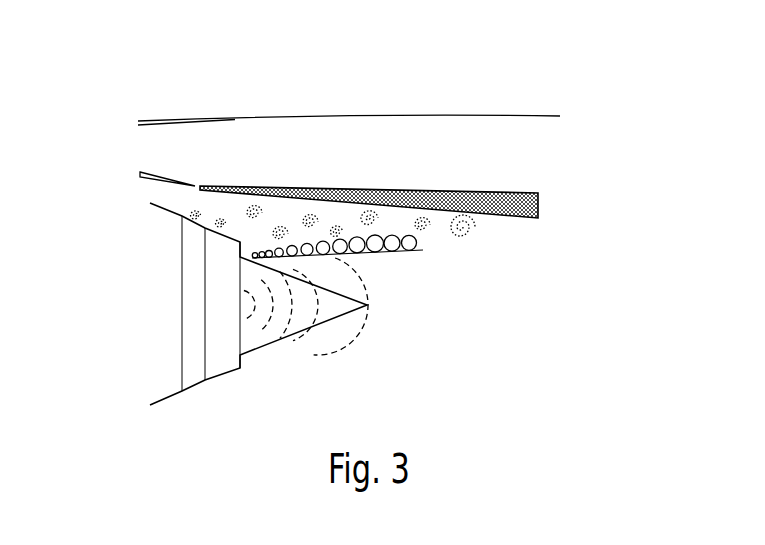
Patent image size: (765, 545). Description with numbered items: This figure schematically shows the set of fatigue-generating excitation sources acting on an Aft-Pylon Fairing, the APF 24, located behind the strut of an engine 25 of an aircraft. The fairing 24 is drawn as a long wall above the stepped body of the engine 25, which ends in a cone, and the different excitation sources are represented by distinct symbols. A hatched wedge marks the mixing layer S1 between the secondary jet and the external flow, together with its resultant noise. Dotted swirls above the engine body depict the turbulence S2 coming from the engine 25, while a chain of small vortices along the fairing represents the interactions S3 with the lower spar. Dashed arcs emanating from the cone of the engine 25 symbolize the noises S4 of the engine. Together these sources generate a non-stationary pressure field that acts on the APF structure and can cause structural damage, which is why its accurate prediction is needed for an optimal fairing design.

The APF fairing 24 is at (273, 118).
The engine 25 is at (152, 408).
The mixing layer S1 is at (556, 201).
The turbulence from the engine S2 is at (493, 240).
The interactions with the lower spar S3 is at (410, 267).
The noises of the engine S4 is at (380, 334).